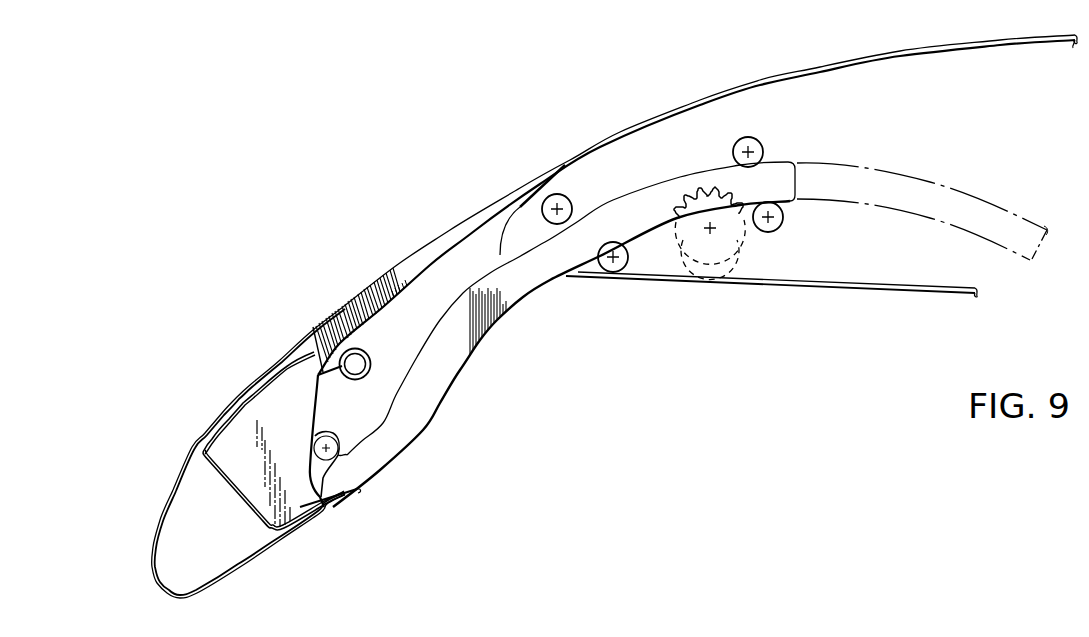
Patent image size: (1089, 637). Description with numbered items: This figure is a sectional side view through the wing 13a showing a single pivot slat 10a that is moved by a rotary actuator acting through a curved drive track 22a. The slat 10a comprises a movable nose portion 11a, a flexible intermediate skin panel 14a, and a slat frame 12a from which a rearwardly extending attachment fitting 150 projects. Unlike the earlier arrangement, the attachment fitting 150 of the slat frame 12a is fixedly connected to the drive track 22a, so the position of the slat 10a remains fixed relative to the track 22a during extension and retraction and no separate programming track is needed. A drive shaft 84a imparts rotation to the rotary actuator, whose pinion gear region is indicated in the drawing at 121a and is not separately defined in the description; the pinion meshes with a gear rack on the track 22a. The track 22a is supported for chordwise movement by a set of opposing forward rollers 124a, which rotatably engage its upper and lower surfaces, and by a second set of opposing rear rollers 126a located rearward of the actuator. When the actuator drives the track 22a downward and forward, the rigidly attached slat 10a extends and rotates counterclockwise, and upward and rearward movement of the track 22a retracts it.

The single pivot slat 10a is at (220, 412).
The movable nose portion 11a is at (164, 537).
The slat frame 12a is at (258, 405).
The wing 13a is at (807, 87).
The flexible intermediate skin panel 14a is at (257, 370).
The drive track 22a is at (502, 322).
The drive shaft 84a is at (718, 250).
The gear pitch circle 121a is at (737, 252).
The forward rollers 124a is at (566, 199).
The rear rollers 126a is at (763, 152).
The attachment fitting 150 is at (317, 434).